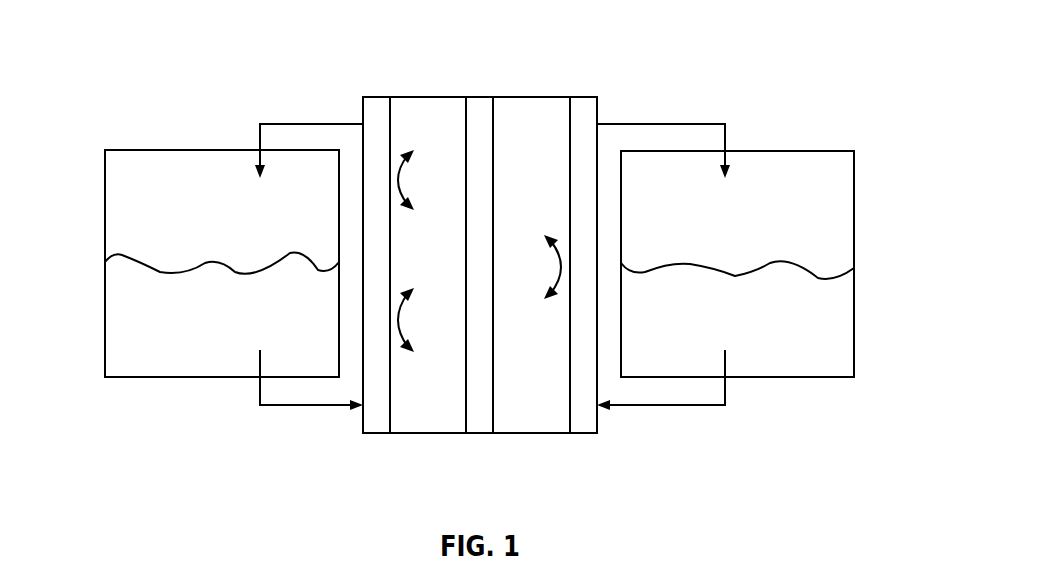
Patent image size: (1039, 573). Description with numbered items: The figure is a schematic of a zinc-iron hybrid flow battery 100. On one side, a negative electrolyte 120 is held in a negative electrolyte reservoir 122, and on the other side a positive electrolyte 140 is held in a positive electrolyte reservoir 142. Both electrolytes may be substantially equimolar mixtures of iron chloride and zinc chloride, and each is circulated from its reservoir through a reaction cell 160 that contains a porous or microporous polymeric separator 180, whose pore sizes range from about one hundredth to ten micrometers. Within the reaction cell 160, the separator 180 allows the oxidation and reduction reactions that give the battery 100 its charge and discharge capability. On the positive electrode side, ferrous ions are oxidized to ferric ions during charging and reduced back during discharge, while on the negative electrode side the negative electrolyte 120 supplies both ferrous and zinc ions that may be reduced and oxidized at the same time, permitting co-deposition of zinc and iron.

The battery 100 is at (150, 38).
The negative electrolyte 120 is at (135, 310).
The negative electrolyte reservoir 122 is at (242, 226).
The positive electrolyte 140 is at (828, 323).
The positive electrolyte reservoir 142 is at (759, 226).
The reaction cell 160 is at (425, 433).
The polymeric separator 180 is at (483, 86).